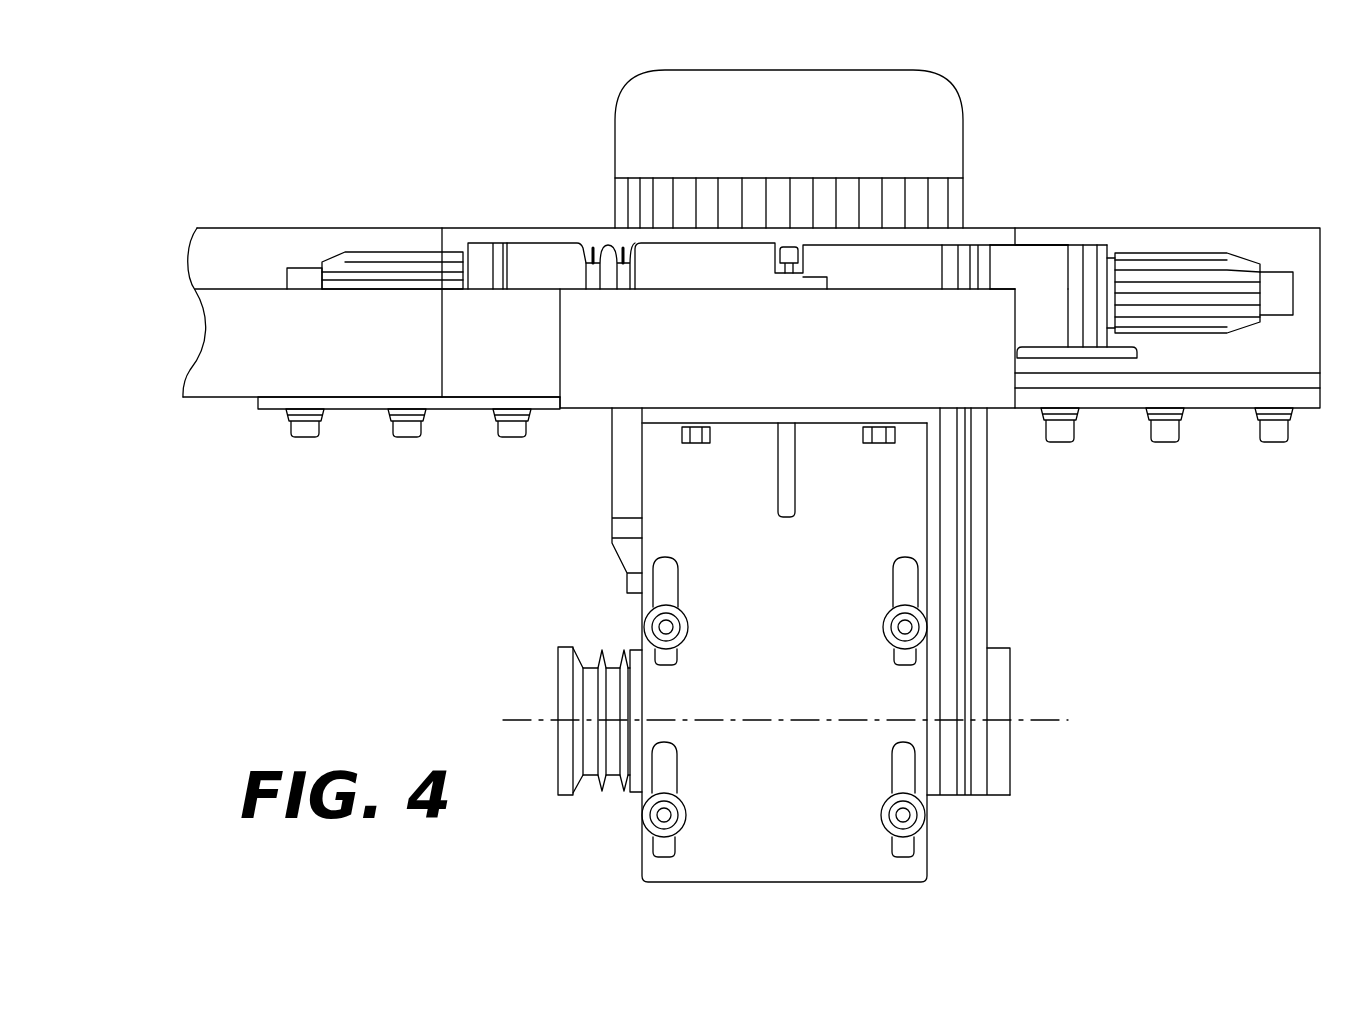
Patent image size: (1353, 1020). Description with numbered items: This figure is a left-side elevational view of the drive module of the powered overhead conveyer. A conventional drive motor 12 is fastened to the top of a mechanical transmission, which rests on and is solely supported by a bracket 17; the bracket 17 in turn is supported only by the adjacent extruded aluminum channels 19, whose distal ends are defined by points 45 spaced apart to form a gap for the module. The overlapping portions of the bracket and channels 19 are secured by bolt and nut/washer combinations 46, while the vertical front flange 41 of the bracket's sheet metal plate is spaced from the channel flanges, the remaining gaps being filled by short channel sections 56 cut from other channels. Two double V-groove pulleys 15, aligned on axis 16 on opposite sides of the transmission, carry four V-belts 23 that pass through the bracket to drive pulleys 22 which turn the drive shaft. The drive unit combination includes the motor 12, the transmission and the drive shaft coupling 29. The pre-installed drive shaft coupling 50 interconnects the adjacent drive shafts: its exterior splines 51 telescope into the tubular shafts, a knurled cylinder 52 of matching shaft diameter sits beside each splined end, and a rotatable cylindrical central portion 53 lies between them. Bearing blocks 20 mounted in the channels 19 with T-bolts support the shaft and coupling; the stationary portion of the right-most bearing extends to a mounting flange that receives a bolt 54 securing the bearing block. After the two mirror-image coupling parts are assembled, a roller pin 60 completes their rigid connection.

The drive motor 12 is at (880, 125).
The belt drive pulleys 15 is at (555, 690).
The axis 16 is at (1020, 725).
The bracket 17 is at (732, 366).
The extruded aluminum channel 19 is at (210, 250).
The bearing blocks 20 is at (500, 247).
The drive pulley 22 is at (593, 237).
The belt 23 is at (978, 242).
The drive shaft coupling 29 is at (1045, 253).
The front flange 41 is at (603, 385).
The points 45 is at (442, 227).
The bolts 46 is at (403, 440).
The drive shaft coupling 50 is at (1003, 137).
The exterior splines 51 is at (337, 263).
The knurled cylinder 52 is at (477, 250).
The rotatable cylindrical central portion 53 is at (560, 267).
The bolt 54 is at (518, 440).
The short channel sections 56 is at (523, 237).
The roller pin 60 is at (797, 247).